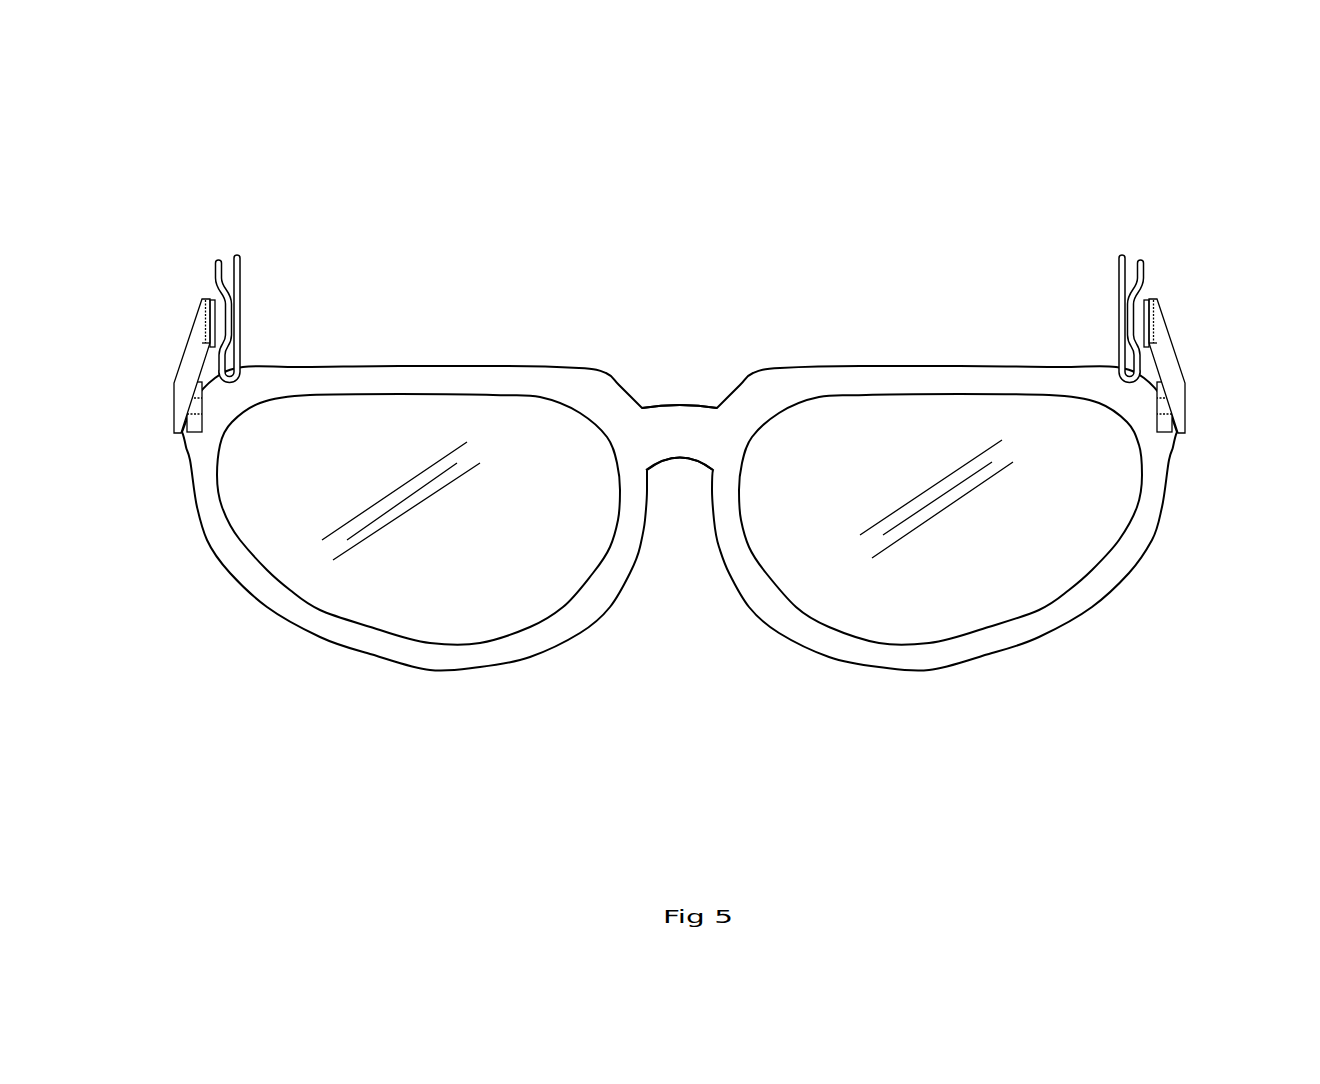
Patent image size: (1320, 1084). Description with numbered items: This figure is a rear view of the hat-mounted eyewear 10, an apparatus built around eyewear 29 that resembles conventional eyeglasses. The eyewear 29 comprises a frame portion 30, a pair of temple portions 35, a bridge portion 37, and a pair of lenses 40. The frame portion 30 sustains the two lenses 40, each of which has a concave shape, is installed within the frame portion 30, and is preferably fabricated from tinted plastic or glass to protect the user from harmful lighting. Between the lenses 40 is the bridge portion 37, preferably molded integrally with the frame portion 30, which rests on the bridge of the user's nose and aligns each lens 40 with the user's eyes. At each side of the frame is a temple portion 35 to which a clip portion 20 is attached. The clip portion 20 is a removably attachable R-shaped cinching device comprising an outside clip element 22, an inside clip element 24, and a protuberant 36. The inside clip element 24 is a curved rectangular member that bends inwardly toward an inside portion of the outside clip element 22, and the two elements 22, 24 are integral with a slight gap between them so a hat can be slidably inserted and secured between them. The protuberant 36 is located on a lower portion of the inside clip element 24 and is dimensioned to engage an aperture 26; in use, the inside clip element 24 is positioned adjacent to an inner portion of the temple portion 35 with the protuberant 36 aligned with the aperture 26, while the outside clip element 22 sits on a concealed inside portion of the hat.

The hat-mounted eyewear 10 is at (701, 441).
The clip portion 20 is at (659, 271).
The outside clip element 22 is at (238, 360).
The inside clip element 24 is at (222, 289).
The aperture 26 is at (207, 320).
The eyewear 29 is at (679, 458).
The frame portion 30 is at (463, 385).
The temple portion 35 is at (174, 432).
The protuberant 36 is at (212, 322).
The bridge portion 37 is at (684, 428).
The lens 40 is at (455, 562).